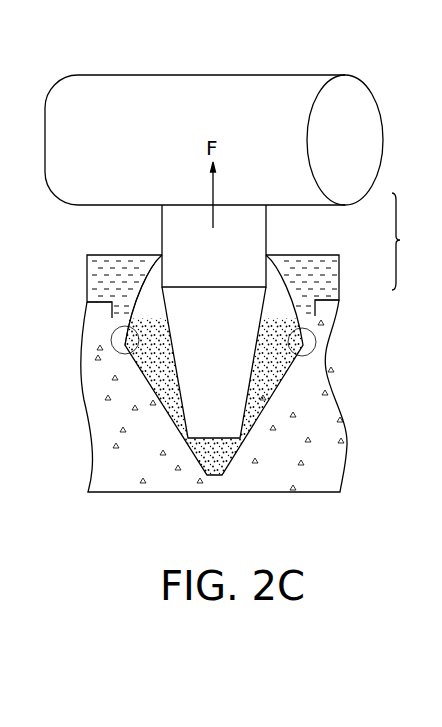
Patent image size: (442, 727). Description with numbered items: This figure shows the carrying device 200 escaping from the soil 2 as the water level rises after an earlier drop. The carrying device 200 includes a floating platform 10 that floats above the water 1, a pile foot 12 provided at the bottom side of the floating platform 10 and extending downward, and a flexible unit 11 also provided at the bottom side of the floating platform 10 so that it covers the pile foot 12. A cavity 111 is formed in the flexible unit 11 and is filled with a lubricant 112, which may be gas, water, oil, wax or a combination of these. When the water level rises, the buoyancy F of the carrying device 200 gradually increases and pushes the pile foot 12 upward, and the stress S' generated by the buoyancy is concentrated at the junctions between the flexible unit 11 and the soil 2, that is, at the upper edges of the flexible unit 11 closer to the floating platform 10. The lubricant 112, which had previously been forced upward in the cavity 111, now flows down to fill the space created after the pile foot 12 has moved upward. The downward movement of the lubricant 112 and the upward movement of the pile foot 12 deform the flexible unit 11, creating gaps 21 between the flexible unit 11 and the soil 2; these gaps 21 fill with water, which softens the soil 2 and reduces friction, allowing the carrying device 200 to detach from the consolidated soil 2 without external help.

The carrying device 200 is at (416, 241).
The floating platform 10 is at (292, 195).
The flexible unit 11 is at (295, 278).
The cavity 111 is at (145, 282).
The lubricant 112 is at (162, 390).
The pile foot 12 is at (245, 312).
The water 1 is at (93, 280).
The soil 2 is at (97, 388).
The gaps 21 is at (120, 318).
The stress S' is at (208, 345).